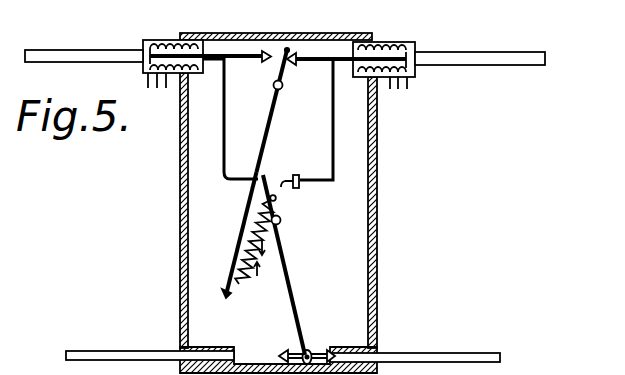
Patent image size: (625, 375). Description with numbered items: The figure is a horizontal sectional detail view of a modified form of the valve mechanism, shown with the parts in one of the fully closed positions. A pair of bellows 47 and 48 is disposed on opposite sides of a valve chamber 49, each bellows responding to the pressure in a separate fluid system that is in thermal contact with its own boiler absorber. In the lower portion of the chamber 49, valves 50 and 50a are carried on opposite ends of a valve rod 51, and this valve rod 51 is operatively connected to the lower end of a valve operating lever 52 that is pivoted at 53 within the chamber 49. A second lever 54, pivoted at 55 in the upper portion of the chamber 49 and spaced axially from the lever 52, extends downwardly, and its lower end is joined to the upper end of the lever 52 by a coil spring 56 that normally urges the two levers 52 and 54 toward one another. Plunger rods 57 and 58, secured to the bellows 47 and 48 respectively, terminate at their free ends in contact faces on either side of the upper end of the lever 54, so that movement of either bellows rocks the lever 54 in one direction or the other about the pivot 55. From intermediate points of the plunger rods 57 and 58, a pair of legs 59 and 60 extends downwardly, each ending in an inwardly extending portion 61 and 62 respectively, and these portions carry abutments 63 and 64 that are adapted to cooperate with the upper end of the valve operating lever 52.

The bellows 47 is at (141, 43).
The bellows 48 is at (417, 45).
The valve chamber 49 is at (378, 162).
The valve 50 is at (281, 355).
The valve 50a is at (322, 350).
The valve rod 51 is at (295, 350).
The valve operating lever 52 is at (291, 272).
The pivot 53 is at (283, 220).
The second lever 54 is at (266, 136).
The pivot 55 is at (283, 85).
The coil spring 56 is at (244, 284).
The plunger rod 57 is at (251, 61).
The plunger rod 58 is at (350, 66).
The leg 59 is at (223, 137).
The leg 60 is at (334, 126).
The inwardly extending portion 61 is at (231, 179).
The inwardly extending portion 62 is at (311, 181).
The abutment 63 is at (267, 163).
The abutment 64 is at (275, 164).